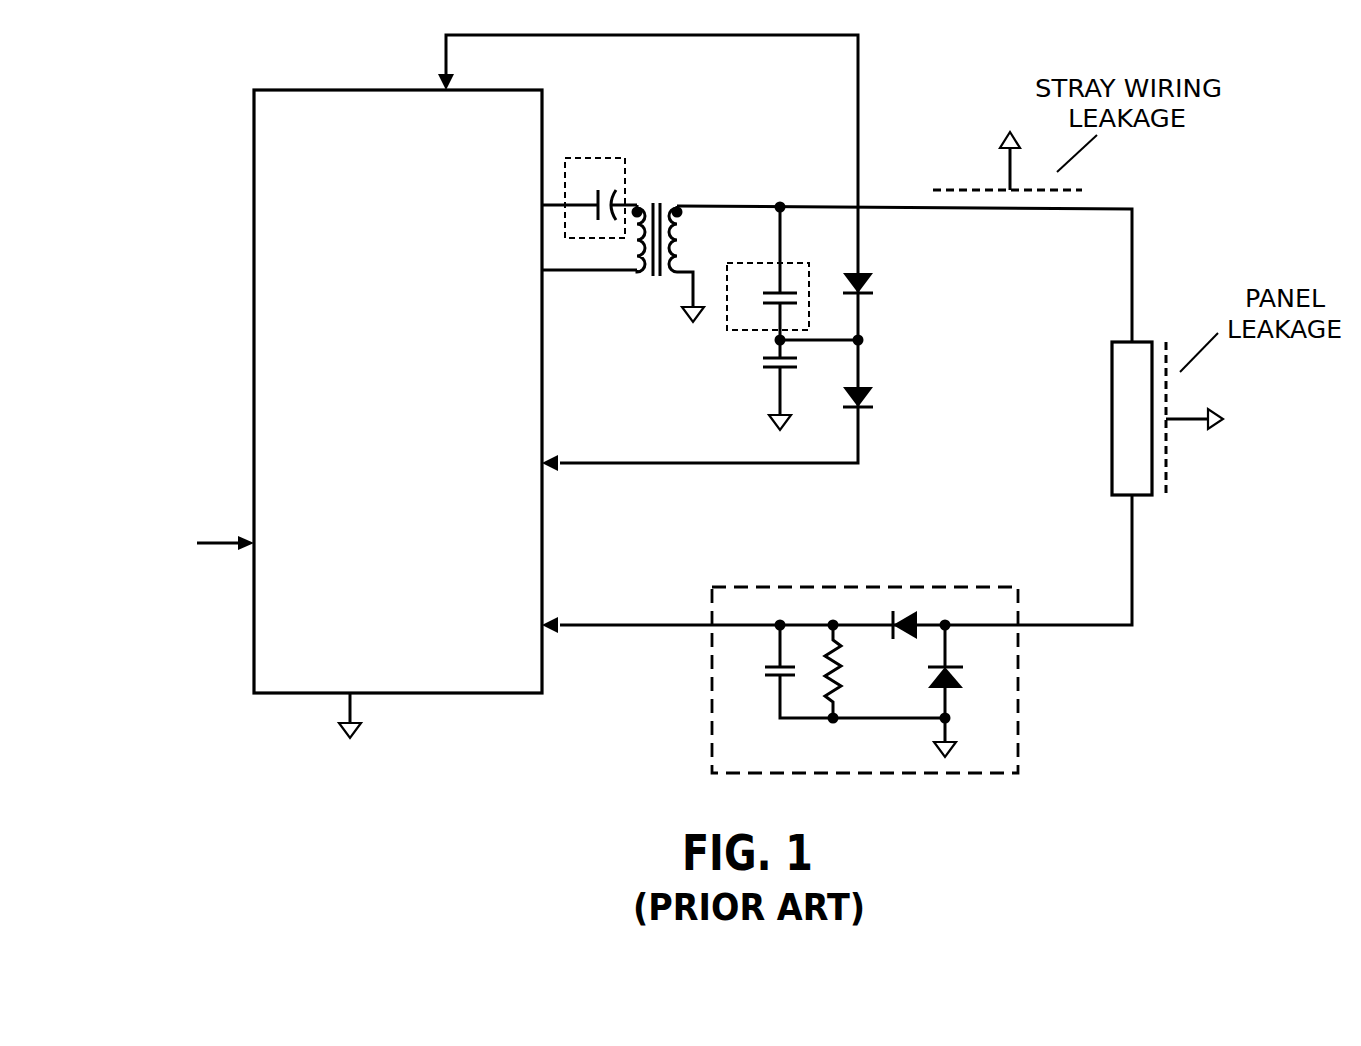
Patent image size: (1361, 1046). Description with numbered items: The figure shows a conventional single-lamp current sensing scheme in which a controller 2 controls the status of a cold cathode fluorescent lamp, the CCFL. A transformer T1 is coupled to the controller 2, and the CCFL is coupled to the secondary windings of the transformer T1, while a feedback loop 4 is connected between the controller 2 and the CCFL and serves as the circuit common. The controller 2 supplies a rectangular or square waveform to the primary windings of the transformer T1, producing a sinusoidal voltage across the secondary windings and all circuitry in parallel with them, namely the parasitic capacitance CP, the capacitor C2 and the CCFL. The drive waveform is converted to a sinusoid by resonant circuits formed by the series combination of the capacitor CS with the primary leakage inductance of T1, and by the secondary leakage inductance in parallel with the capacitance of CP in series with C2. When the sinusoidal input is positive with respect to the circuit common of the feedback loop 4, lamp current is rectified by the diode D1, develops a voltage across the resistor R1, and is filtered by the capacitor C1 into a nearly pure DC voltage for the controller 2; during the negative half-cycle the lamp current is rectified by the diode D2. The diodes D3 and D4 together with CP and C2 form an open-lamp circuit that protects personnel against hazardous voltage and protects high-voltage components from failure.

The controller 2 is at (254, 127).
The feedback loop 4 is at (886, 680).
The series capacitor CS is at (595, 198).
The transformer T1 is at (668, 248).
The parasitic capacitance CP is at (768, 273).
The capacitor C2 is at (762, 385).
The diode D3 is at (877, 285).
The diode D4 is at (877, 398).
The cold cathode fluorescent lamp CCFL is at (1069, 418).
The capacitor C1 is at (839, 671).
The resistor R1 is at (850, 671).
The diode D1 is at (901, 637).
The diode D2 is at (961, 691).